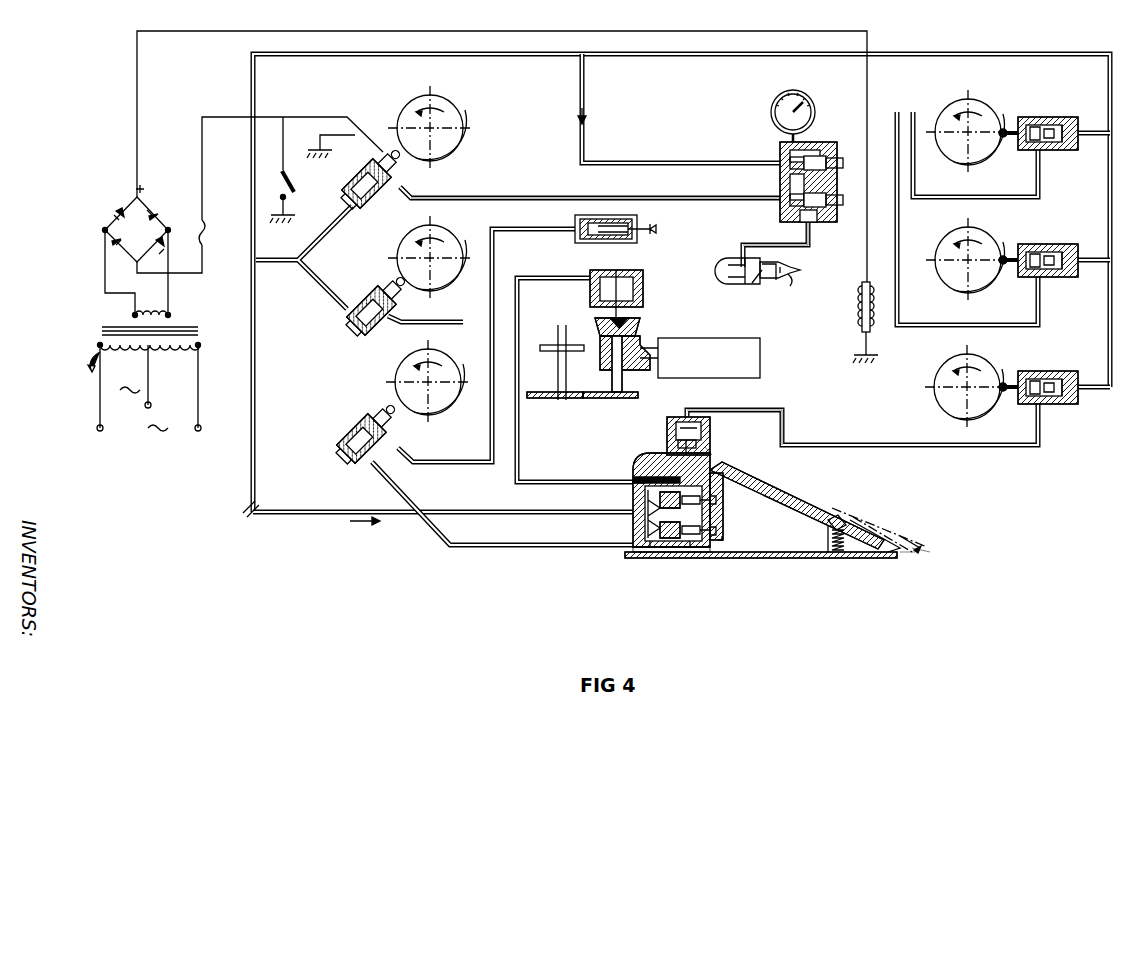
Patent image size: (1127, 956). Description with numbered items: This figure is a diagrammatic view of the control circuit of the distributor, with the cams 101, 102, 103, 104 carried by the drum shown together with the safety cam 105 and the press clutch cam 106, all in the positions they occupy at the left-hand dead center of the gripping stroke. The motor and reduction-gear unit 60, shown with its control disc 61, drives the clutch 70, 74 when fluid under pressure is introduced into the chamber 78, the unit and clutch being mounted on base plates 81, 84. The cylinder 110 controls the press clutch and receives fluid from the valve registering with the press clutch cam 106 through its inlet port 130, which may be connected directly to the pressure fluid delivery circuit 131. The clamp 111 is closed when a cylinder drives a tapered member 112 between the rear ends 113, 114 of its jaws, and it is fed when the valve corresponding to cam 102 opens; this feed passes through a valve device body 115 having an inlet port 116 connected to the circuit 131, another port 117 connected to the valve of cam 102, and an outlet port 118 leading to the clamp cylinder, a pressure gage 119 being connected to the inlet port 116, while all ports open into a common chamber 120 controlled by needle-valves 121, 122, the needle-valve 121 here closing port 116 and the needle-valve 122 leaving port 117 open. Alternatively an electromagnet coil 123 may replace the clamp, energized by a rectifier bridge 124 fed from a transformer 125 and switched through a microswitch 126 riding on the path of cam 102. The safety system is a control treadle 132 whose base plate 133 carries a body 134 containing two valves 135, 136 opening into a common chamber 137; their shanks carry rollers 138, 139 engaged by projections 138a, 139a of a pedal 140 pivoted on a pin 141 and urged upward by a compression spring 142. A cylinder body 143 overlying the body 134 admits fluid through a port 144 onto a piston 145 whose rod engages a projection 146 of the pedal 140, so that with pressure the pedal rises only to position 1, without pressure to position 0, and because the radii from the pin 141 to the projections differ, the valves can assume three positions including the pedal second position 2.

The position 0 is at (919, 540).
The position 1 is at (932, 561).
The pedal second position 2 is at (912, 566).
The motor and reduction-gear unit 60 is at (695, 358).
The control disc 61 is at (548, 343).
The clutch 70 is at (642, 337).
The clutch 74 is at (592, 327).
The chamber 78 is at (640, 283).
The base plate 81 is at (600, 399).
The base plate 84 is at (545, 399).
The cam 101 is at (990, 160).
The cam 102 is at (450, 102).
The cam 103 is at (985, 285).
The cam 104 is at (452, 240).
The safety cam 105 is at (935, 400).
The press clutch cam 106 is at (440, 418).
The cylinder 110 is at (650, 197).
The clamp 111 is at (755, 290).
The tapered member 112 is at (776, 265).
The rear end 113 is at (792, 268).
The rear end 114 is at (790, 284).
The valve device body 115 is at (828, 140).
The inlet port 116 is at (784, 163).
The port 117 is at (782, 200).
The outlet port 118 is at (810, 240).
The pressure gage 119 is at (800, 92).
The common chamber 120 is at (845, 165).
The needle-valve 121 is at (940, 108).
The needle-valve 122 is at (848, 200).
The coil 123 is at (872, 318).
The rectifier bridge 124 is at (98, 215).
The transformer 125 is at (144, 371).
The microswitch 126 is at (388, 138).
The inlet port 130 is at (372, 470).
The pressure fluid delivery circuit 131 is at (253, 518).
The control treadle 132 is at (649, 560).
The base plate 133 is at (787, 558).
The body 134 is at (630, 499).
The valve 135 is at (648, 515).
The valve 136 is at (670, 556).
The common chamber 137 is at (630, 556).
The roller 138 is at (714, 496).
The projection 138a is at (800, 505).
The roller 139 is at (702, 533).
The projection 139a is at (722, 538).
The pedal 140 is at (800, 512).
The pin 141 is at (638, 460).
The compression spring 142 is at (842, 556).
The cylinder body 143 is at (703, 455).
The port 144 is at (765, 403).
The piston 145 is at (682, 417).
The projection 146 is at (712, 455).